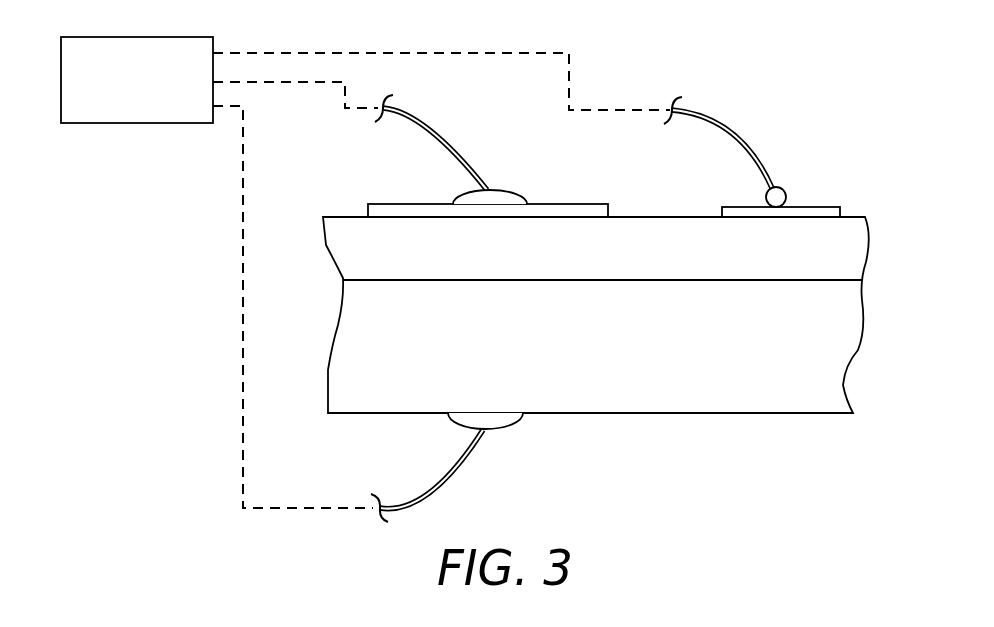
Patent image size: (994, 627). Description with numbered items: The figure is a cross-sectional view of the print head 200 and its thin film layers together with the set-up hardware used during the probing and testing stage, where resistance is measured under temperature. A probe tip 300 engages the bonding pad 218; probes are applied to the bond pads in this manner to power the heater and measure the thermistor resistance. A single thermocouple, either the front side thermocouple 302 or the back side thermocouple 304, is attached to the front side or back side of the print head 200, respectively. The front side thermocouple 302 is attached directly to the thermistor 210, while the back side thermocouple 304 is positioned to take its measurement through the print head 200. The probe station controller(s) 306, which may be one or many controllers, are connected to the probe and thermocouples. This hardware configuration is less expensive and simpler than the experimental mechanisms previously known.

The print head 200 is at (313, 347).
The thermistor 210 is at (368, 204).
The bonding pad 218 is at (825, 206).
The probe tip 300 is at (745, 135).
The front side thermocouple 302 is at (458, 138).
The back side thermocouple 304 is at (453, 480).
The probe station controller(s) 306 is at (130, 124).